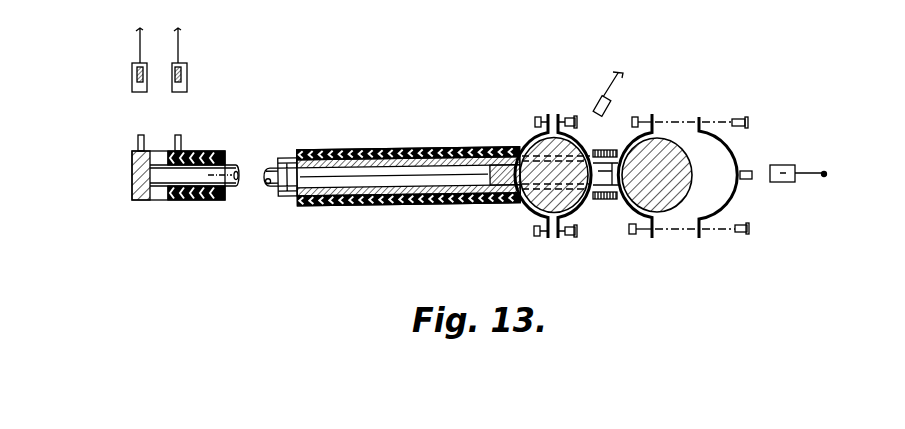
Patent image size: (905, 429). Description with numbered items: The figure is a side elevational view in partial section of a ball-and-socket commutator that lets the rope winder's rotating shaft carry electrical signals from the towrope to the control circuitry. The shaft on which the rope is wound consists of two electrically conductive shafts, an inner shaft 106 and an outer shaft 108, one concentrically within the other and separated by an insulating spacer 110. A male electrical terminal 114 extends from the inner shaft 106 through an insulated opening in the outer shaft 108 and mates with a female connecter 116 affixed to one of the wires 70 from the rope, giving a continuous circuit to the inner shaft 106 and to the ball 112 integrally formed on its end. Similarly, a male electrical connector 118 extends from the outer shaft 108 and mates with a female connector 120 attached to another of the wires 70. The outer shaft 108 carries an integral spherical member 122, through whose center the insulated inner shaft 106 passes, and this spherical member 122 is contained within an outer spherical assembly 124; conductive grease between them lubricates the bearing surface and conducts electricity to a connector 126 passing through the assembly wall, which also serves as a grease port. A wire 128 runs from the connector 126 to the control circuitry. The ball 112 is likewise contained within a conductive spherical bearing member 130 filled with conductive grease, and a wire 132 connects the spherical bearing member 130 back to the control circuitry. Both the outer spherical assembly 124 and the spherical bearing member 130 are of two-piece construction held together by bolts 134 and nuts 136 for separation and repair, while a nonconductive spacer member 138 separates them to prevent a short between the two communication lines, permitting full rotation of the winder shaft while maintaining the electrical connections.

The wires 70 is at (137, 45).
The inner shaft 106 is at (272, 163).
The outer shaft 108 is at (373, 150).
The insulating spacer 110 is at (292, 156).
The ball 112 is at (675, 222).
The male electrical terminal 114 is at (138, 136).
The female connecter 116 is at (132, 78).
The male electrical connector 118 is at (183, 138).
The female connector 120 is at (187, 78).
The spherical member 122 is at (527, 207).
The outer spherical assembly 124 is at (528, 140).
The connector 126 is at (587, 137).
The wire 128 is at (620, 74).
The spherical bearing member 130 is at (738, 158).
The wire 132 is at (812, 178).
The bolts 134 is at (572, 115).
The nuts 136 is at (537, 115).
The nonconductive spacer member 138 is at (604, 201).